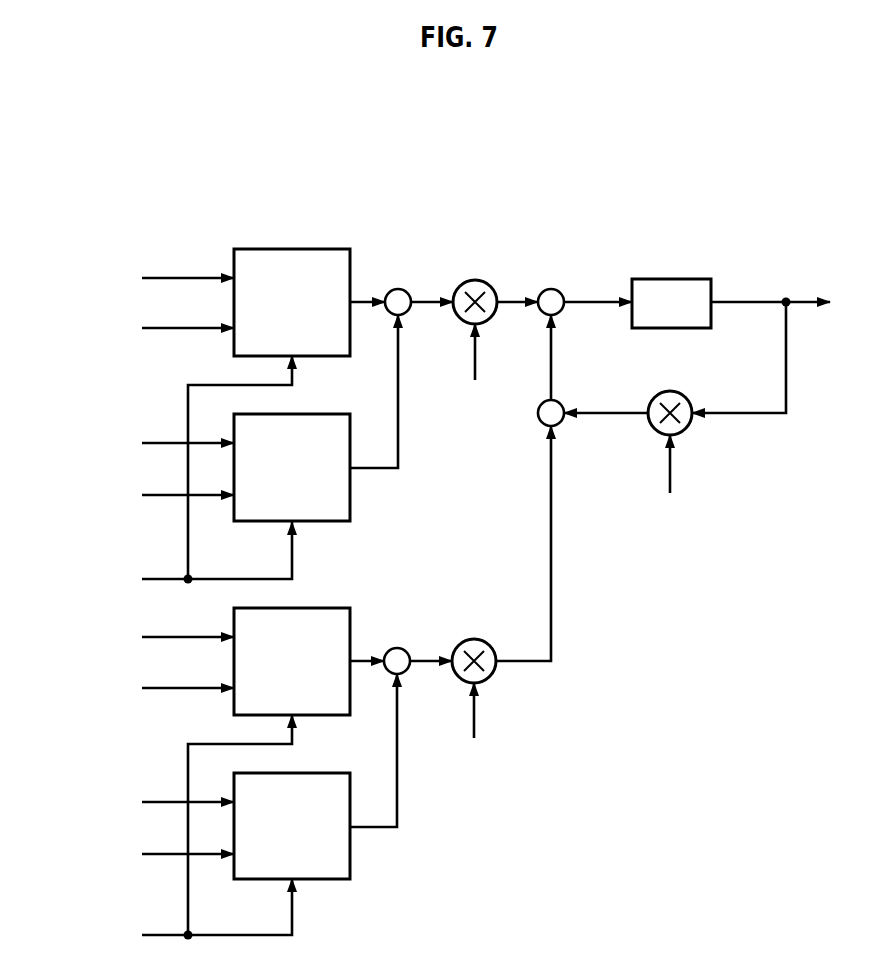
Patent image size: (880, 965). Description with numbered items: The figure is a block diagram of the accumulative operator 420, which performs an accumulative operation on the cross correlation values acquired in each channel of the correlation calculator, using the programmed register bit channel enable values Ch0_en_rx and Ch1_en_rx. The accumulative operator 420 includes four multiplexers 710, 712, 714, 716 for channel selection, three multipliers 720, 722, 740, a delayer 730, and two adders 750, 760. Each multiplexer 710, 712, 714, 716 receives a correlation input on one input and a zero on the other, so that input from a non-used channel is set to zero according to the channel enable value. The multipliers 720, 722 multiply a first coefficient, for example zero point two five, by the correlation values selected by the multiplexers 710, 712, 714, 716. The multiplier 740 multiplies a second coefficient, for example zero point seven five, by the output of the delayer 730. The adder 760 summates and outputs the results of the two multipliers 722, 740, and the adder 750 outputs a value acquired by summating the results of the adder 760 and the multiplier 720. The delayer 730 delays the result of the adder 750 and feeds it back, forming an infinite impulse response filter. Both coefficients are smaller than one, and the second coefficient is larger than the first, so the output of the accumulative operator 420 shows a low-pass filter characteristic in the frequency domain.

The accumulative operator 420 is at (788, 175).
The multiplexer 710 is at (300, 249).
The multiplexer 712 is at (300, 414).
The multiplexer 714 is at (300, 608).
The multiplexer 716 is at (300, 773).
The multiplier 720 is at (490, 284).
The multiplier 722 is at (488, 643).
The delayer 730 is at (655, 279).
The multiplier 740 is at (683, 395).
The adder 750 is at (560, 292).
The adder 760 is at (561, 404).